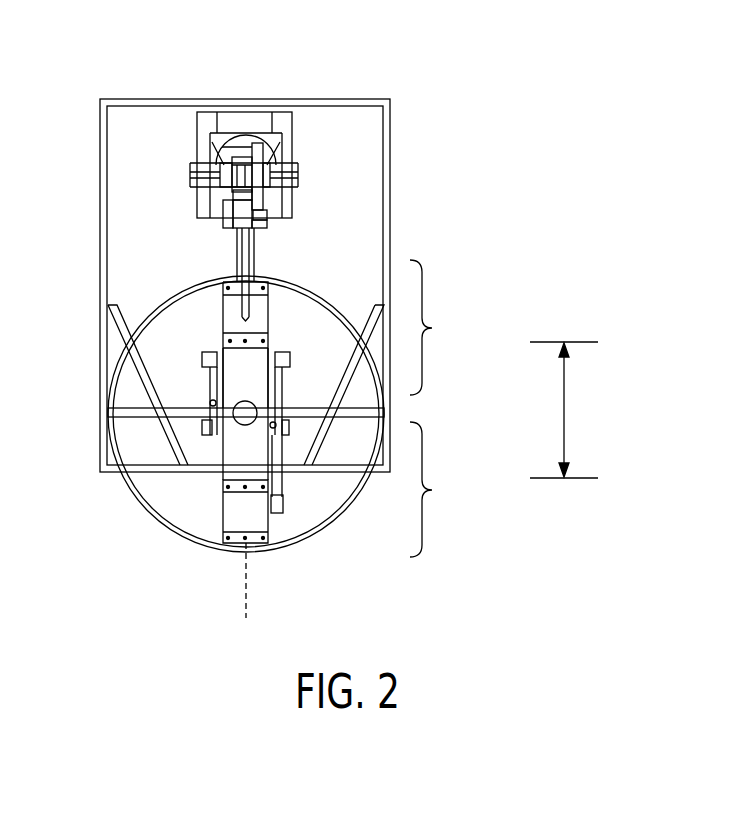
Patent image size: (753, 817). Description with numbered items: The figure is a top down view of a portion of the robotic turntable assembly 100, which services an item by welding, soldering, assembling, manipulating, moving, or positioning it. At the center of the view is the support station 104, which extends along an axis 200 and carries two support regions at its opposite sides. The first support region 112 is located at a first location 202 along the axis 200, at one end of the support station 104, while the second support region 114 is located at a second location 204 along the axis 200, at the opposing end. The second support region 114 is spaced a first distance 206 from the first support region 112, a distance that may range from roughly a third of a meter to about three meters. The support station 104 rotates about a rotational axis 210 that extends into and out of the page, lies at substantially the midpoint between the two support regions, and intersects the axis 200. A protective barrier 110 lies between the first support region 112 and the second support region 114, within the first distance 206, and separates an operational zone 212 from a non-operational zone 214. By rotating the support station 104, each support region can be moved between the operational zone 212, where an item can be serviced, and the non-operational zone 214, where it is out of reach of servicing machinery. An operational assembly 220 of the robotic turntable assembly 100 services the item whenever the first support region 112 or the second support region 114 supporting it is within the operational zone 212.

The robotic turntable assembly 100 is at (130, 74).
The operational assembly 220 is at (207, 200).
The second location 204 is at (279, 305).
The second support region 114 is at (232, 312).
The support station 104 is at (237, 385).
The protective barrier 110 is at (123, 412).
The rotational axis 210 is at (245, 404).
The first support region 112 is at (228, 510).
The first location 202 is at (306, 500).
The axis 200 is at (242, 603).
The operational zone 212 is at (437, 327).
The non-operational zone 214 is at (437, 489).
The first distance 206 is at (565, 400).